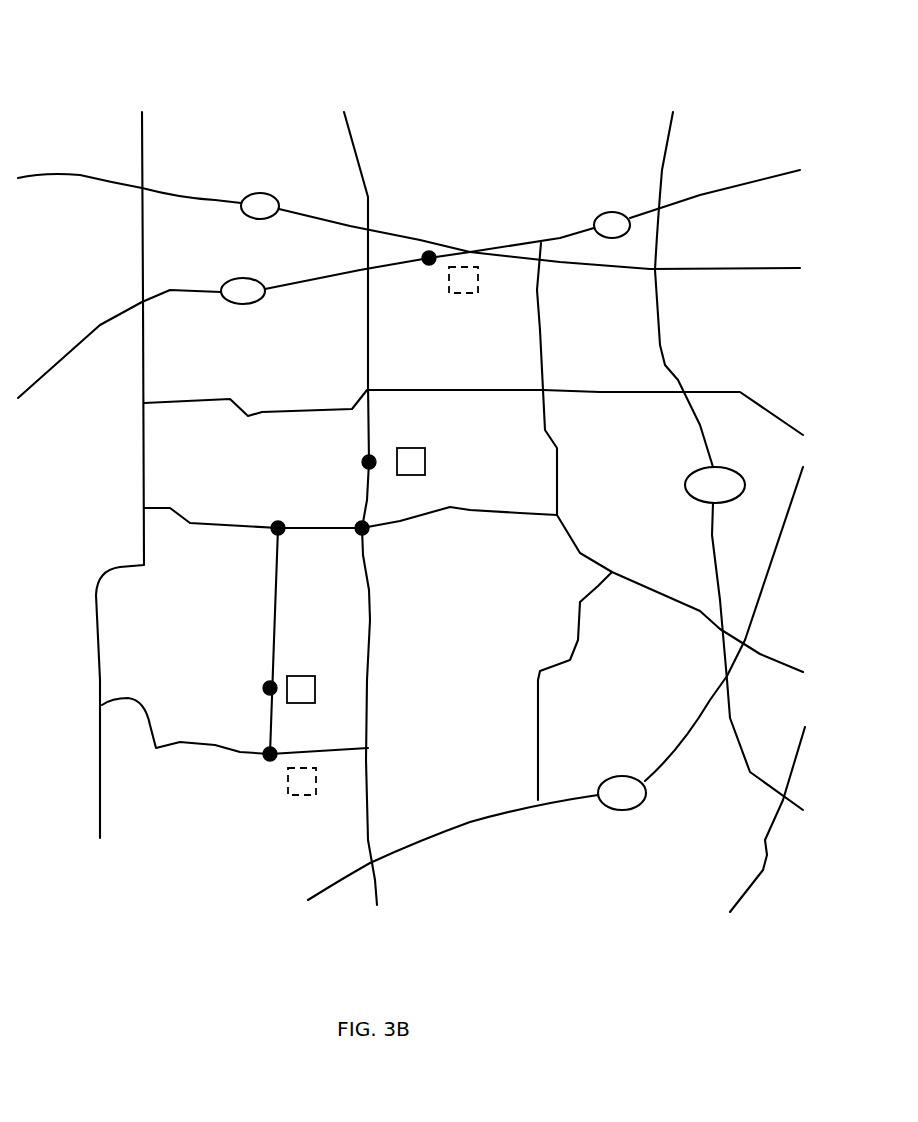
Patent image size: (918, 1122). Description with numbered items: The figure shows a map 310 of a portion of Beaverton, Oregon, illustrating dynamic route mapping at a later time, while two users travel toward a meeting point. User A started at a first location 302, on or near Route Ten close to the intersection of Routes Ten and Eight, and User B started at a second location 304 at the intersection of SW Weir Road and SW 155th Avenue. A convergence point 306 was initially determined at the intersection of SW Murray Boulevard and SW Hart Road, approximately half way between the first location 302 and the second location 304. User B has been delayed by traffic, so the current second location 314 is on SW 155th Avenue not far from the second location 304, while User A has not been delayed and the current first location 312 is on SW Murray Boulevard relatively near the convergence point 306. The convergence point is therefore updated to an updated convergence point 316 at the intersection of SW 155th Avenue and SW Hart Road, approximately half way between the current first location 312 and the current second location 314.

The map 310 is at (115, 36).
The first location 302 is at (431, 280).
The second location 304 is at (270, 780).
The convergence point 306 is at (384, 542).
The current first location 312 is at (349, 462).
The current second location 314 is at (242, 690).
The updated convergence point 316 is at (273, 508).